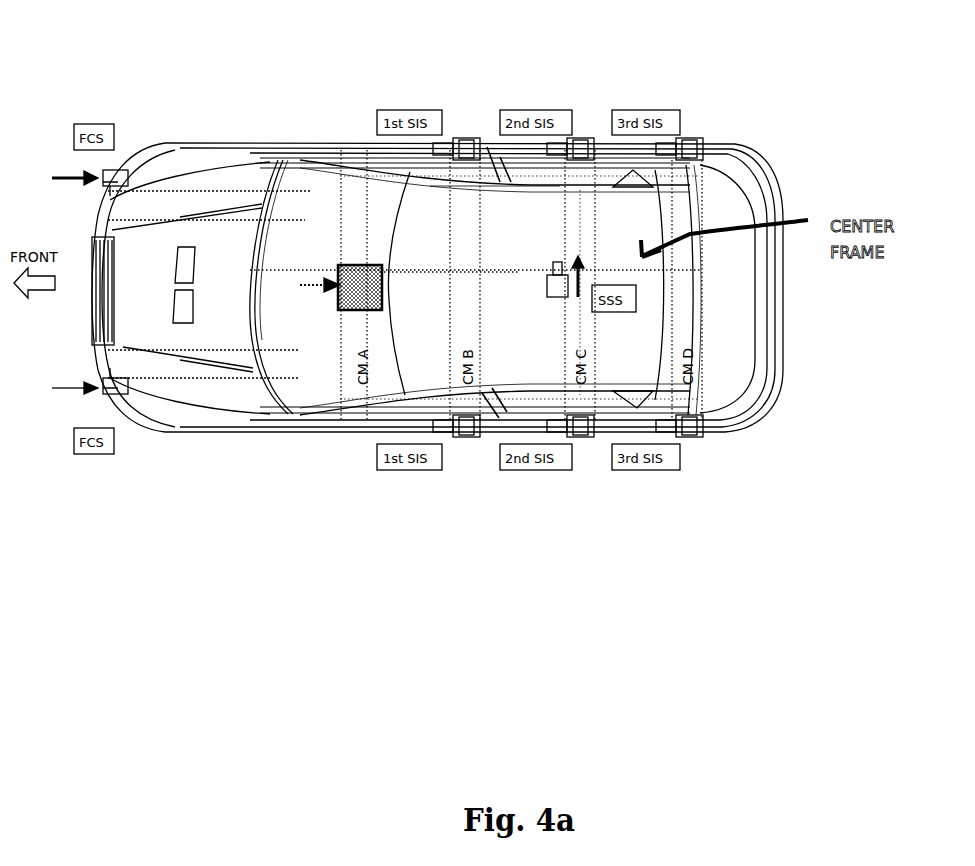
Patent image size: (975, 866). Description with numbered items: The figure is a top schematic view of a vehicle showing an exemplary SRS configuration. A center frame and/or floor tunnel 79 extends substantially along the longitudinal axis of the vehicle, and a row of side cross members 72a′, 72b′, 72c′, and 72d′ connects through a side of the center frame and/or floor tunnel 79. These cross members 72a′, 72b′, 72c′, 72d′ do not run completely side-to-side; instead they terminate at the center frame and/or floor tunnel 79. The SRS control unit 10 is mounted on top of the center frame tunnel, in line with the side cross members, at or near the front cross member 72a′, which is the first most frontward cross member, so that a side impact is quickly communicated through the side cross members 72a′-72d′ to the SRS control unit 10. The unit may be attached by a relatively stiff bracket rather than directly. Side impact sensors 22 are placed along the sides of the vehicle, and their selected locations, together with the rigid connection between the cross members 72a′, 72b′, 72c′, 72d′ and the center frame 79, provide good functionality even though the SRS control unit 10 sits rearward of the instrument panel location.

The front cross member 72a′ is at (355, 237).
The center frame and/or floor tunnel 79 is at (446, 286).
The side impact sensor 22 is at (568, 300).
The cross member 72b′ is at (460, 208).
The cross member 72c′ is at (575, 318).
The cross member 72d′ is at (695, 305).
The SRS control unit 10 is at (347, 310).